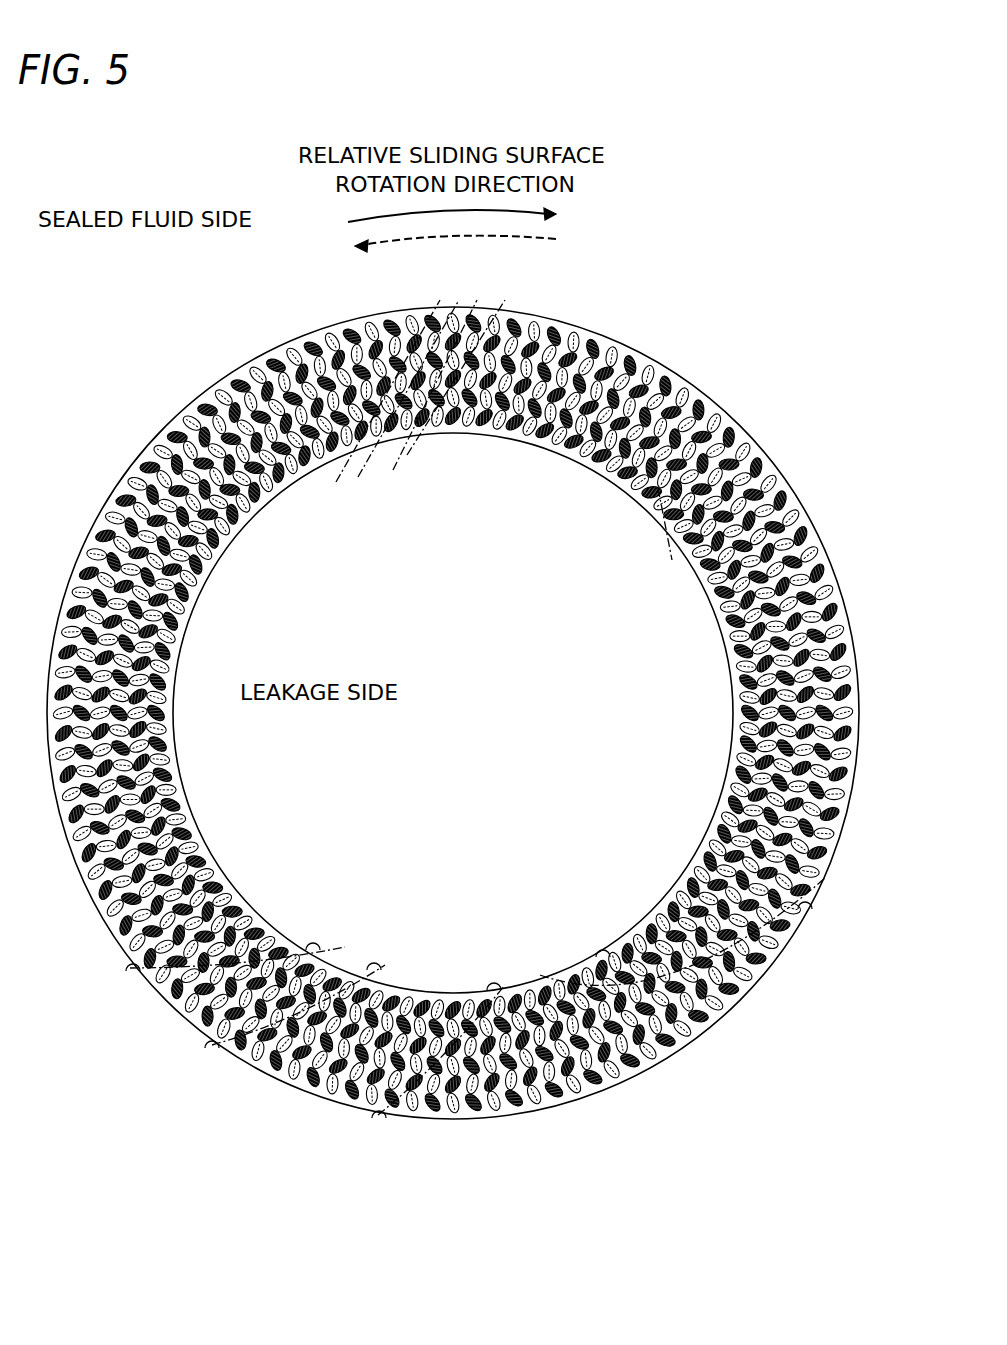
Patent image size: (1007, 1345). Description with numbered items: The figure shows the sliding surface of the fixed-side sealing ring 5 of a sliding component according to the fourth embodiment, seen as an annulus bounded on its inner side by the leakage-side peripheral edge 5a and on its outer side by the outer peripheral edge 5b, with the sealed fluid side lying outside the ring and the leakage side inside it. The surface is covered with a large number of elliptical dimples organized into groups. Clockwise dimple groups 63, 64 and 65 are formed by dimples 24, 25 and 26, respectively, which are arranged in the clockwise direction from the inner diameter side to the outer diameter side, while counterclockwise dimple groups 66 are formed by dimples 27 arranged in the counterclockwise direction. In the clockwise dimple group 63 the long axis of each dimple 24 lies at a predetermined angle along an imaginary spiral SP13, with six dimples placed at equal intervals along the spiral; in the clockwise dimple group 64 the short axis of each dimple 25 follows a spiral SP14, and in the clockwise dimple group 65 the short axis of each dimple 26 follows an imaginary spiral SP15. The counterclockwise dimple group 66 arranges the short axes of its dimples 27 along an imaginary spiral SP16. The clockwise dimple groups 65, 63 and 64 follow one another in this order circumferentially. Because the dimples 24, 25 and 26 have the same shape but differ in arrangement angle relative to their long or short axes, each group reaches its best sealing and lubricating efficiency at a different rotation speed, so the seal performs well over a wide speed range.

The fixed-side sealing ring 5 is at (126, 464).
The leakage-side peripheral edge 5a is at (718, 632).
The outer peripheral surface (sealed fluid side) 5b is at (806, 498).
The imaginary spiral SP13 is at (334, 484).
The spiral SP14 is at (357, 479).
The imaginary spiral SP15 is at (396, 478).
The imaginary spiral SP16 is at (553, 970).
The clockwise dimple group 63 is at (309, 941).
The clockwise dimple group 64 is at (374, 969).
The clockwise dimple group 65 is at (480, 991).
The counterclockwise dimple group 66 is at (598, 956).
The dimple 24 is at (132, 974).
The dimple 25 is at (212, 1050).
The dimple 26 is at (390, 1120).
The dimple 27 is at (804, 912).